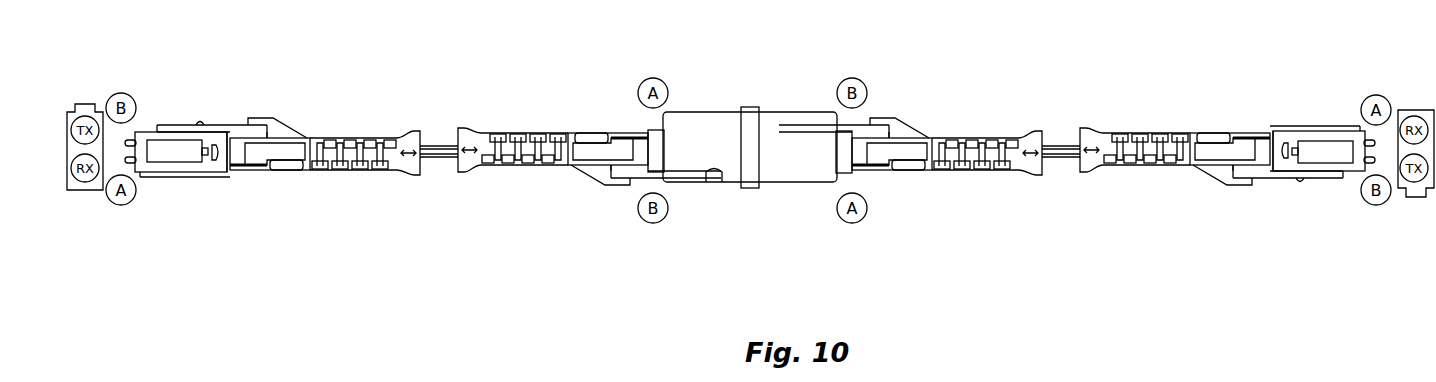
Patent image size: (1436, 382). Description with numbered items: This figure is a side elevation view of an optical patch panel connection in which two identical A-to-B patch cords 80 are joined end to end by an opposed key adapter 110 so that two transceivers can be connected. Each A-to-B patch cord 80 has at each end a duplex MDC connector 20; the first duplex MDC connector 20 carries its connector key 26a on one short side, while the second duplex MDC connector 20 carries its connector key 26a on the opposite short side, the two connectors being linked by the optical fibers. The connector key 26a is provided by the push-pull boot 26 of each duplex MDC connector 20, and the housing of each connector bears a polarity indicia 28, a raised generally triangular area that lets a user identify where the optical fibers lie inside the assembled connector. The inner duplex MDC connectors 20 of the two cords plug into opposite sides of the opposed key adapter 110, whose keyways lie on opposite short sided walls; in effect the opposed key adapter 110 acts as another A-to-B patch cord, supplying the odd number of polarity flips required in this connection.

The duplex MDC connector 20 is at (750, 150).
The push-pull boot 26 is at (285, 130).
The connector key 26a is at (200, 121).
The polarity indicia 28 is at (153, 130).
The A-to-B patch cord 80 is at (450, 95).
The opposed key adapter 110 is at (781, 166).